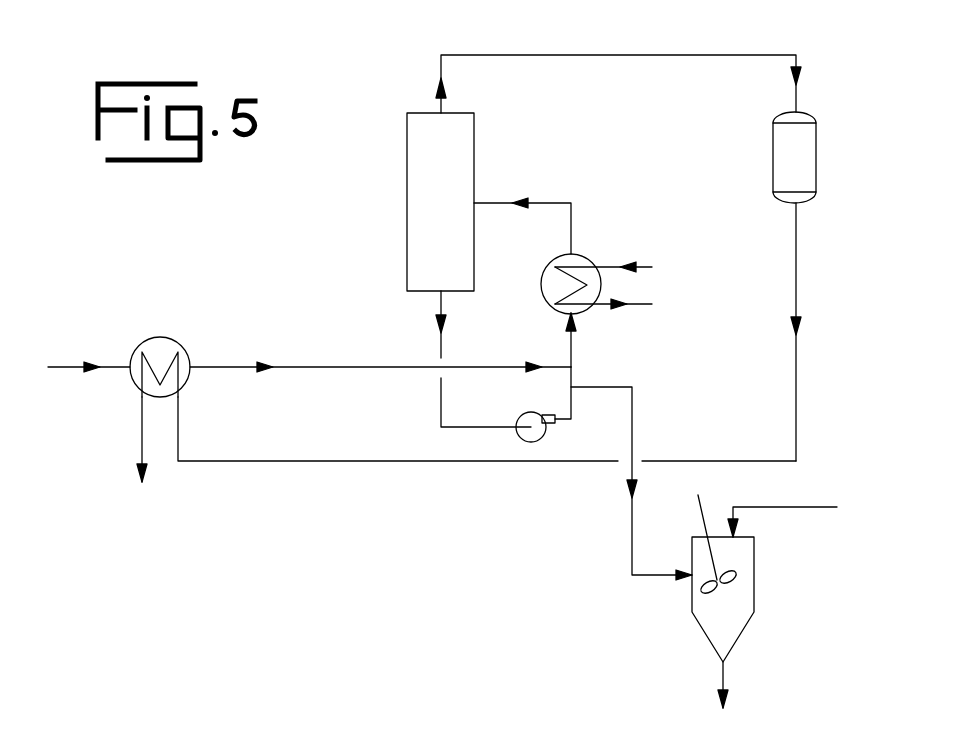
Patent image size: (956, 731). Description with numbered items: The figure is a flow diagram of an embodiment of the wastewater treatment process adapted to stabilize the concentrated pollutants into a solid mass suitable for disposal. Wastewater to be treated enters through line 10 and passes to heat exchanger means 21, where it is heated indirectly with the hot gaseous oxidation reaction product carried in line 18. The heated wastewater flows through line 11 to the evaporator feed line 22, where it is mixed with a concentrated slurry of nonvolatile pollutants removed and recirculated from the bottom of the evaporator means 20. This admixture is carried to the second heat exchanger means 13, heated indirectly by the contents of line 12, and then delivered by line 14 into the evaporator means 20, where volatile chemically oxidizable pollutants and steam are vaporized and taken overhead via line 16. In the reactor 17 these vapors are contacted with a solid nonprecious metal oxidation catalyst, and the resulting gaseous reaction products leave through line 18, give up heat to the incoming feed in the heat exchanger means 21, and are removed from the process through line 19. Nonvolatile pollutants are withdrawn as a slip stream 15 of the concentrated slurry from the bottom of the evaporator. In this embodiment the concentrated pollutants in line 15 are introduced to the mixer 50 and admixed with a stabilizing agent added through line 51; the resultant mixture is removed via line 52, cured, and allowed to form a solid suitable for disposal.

The line 10 is at (62, 367).
The line 11 is at (227, 367).
The line 12 is at (640, 262).
The second heat exchanger means 13 is at (590, 312).
The line 14 is at (571, 225).
The slip stream 15 is at (632, 405).
The line 16 is at (590, 55).
The reactor 17 is at (816, 145).
The line 18 is at (797, 280).
The line 19 is at (142, 432).
The evaporator means 20 is at (474, 145).
The heat exchanger means 21 is at (168, 338).
The evaporator feed line 22 is at (575, 338).
The mixer 50 is at (754, 590).
The line 51 is at (783, 507).
The line 52 is at (723, 675).